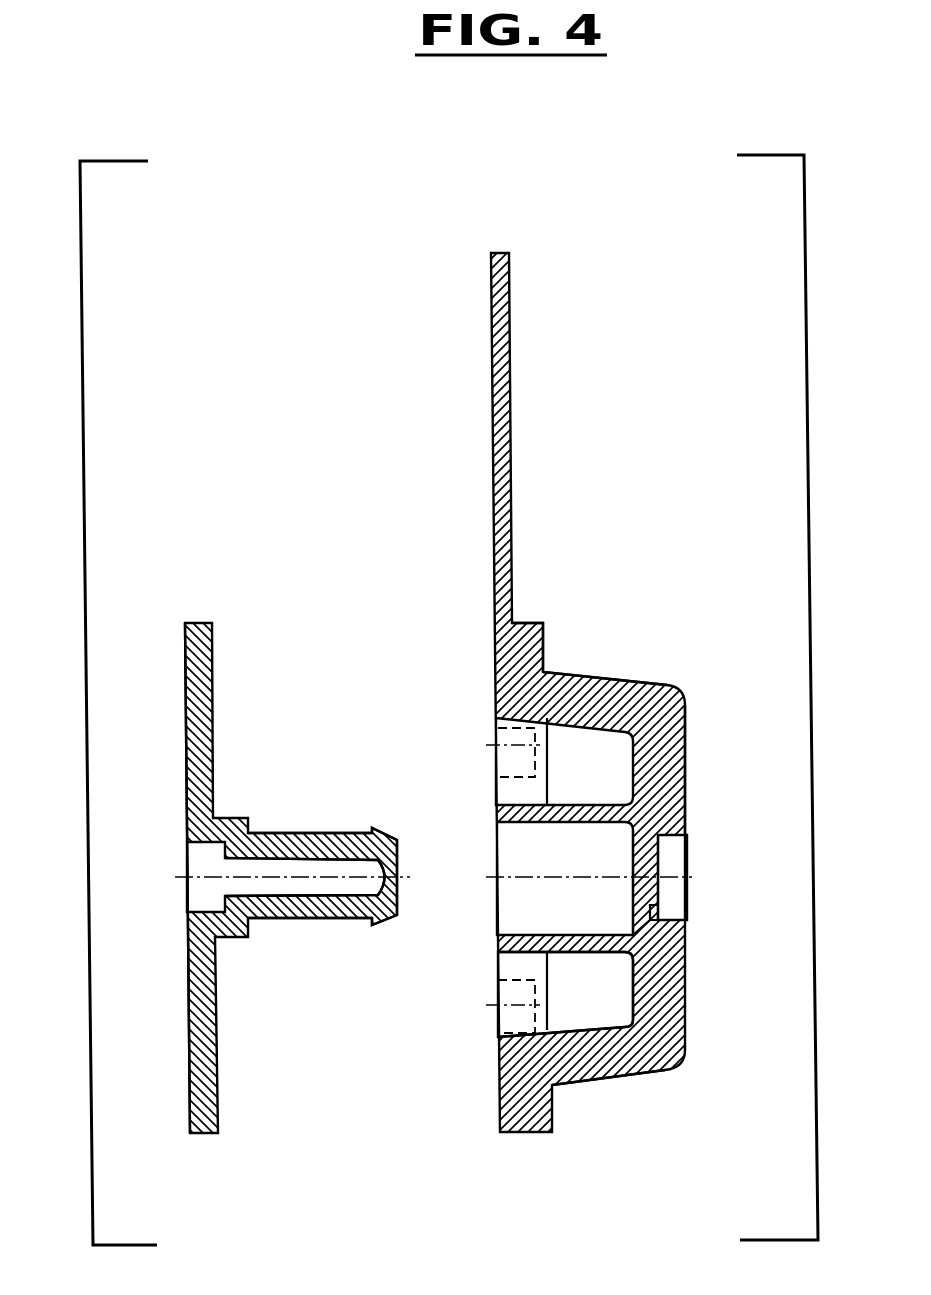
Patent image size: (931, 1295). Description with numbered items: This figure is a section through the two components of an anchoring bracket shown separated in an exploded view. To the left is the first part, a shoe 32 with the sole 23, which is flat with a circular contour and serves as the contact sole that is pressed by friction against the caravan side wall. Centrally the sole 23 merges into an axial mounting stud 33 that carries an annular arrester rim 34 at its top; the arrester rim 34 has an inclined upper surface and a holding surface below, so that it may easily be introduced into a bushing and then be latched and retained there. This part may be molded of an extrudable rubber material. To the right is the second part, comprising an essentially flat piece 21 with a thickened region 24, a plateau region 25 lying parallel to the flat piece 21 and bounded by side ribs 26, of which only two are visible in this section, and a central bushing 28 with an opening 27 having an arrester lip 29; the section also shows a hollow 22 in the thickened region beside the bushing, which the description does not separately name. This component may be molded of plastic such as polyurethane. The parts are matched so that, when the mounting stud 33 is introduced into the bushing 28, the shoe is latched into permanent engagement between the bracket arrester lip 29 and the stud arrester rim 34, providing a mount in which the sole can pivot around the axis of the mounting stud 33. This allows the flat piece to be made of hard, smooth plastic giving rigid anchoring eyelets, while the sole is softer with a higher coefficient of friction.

The flat piece 21 is at (512, 344).
The lower annular cavity 22 is at (613, 993).
The sole 23 is at (185, 798).
The thickened region 24 is at (603, 643).
The plateau 25 is at (685, 742).
The side ribs 26 is at (610, 675).
The opening 27 is at (598, 863).
The bushing 28 is at (583, 827).
The arrester lip 29 is at (650, 903).
The shoe 32 is at (213, 645).
The mounting stud 33 is at (312, 832).
The arrester rim 34 is at (372, 925).